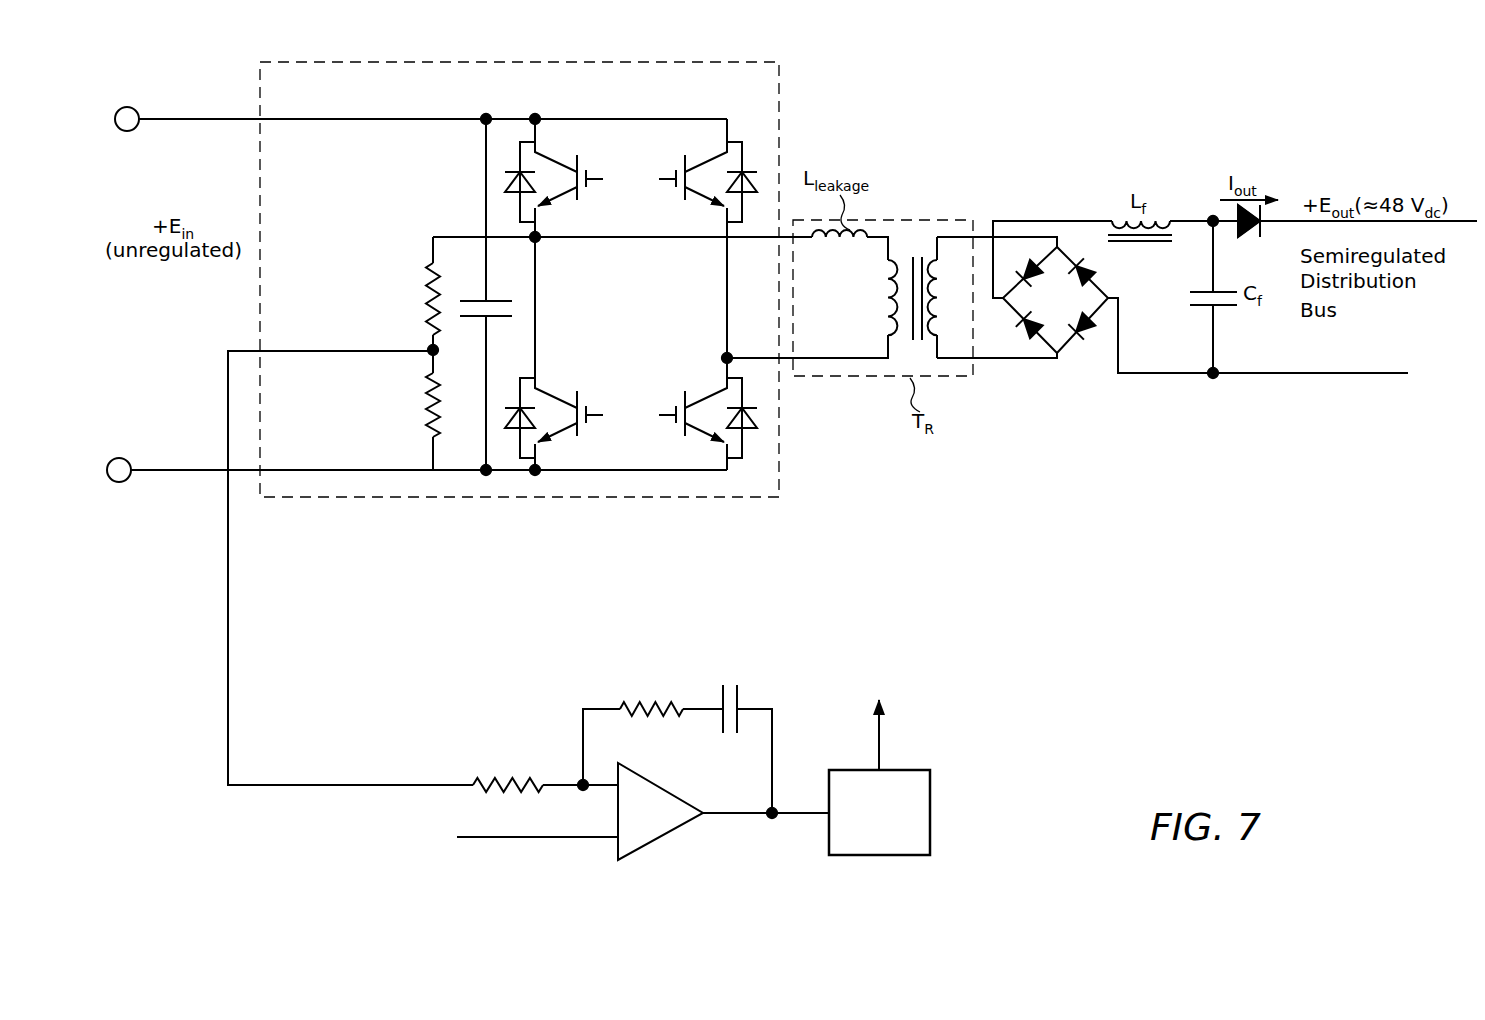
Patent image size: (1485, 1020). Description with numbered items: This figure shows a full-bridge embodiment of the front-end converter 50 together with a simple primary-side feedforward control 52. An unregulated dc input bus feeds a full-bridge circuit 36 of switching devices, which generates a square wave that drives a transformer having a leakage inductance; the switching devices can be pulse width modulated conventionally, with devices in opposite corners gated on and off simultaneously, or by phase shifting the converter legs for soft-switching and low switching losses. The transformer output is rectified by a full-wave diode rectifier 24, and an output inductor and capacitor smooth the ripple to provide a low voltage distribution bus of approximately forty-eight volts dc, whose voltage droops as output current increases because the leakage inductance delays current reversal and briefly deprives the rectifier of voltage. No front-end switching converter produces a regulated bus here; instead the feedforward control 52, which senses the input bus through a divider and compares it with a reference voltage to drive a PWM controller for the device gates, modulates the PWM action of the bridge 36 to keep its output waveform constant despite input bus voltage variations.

The converter 50 is at (483, 62).
The full-bridge circuit 36 is at (756, 124).
The full-wave diode rectifier 24 is at (1078, 364).
The feedforward control 52 is at (950, 589).